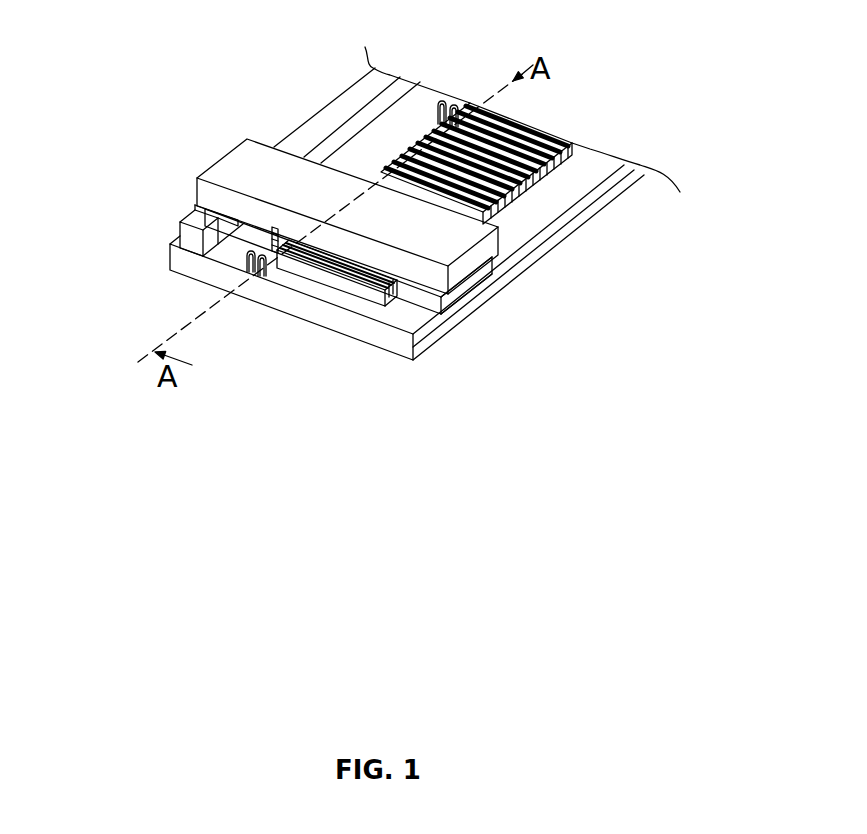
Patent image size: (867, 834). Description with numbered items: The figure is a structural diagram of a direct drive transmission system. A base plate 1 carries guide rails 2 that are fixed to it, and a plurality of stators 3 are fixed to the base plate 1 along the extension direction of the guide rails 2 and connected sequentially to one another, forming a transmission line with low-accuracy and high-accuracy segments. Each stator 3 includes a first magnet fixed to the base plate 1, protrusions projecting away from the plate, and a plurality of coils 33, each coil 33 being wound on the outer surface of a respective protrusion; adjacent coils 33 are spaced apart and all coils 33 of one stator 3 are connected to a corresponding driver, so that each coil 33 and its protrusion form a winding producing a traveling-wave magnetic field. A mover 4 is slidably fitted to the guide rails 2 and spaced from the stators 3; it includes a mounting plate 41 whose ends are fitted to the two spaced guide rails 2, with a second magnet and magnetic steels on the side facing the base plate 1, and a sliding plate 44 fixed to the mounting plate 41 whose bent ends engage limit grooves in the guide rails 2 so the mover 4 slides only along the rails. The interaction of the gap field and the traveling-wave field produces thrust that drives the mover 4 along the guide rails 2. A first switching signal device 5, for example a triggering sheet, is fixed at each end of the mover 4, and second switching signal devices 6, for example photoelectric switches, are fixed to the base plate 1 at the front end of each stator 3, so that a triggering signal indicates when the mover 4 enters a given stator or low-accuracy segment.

The base plate 1 is at (553, 243).
The guide rail 2 is at (180, 237).
The stator 3 is at (553, 143).
The coil 33 is at (565, 168).
The mover 4 is at (300, 263).
The mounting plate 41 is at (220, 163).
The sliding plate 44 is at (462, 278).
The first switching signal device 5 is at (210, 206).
The second switching signal device 6 is at (437, 108).